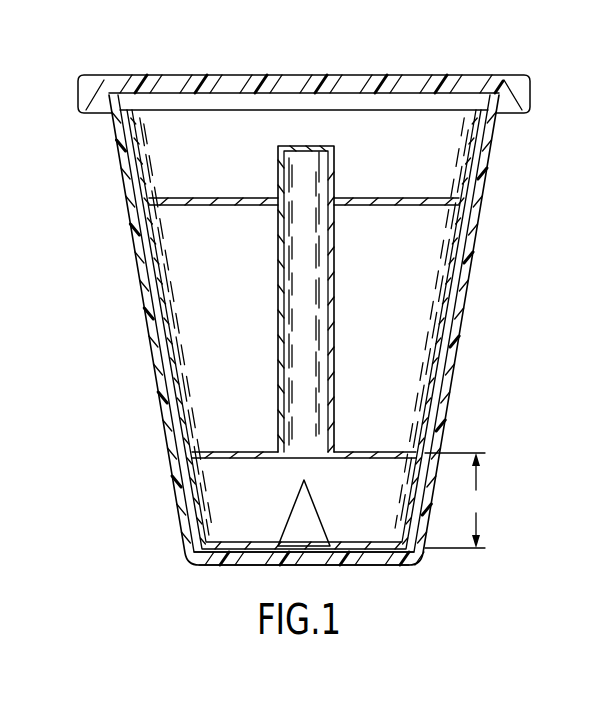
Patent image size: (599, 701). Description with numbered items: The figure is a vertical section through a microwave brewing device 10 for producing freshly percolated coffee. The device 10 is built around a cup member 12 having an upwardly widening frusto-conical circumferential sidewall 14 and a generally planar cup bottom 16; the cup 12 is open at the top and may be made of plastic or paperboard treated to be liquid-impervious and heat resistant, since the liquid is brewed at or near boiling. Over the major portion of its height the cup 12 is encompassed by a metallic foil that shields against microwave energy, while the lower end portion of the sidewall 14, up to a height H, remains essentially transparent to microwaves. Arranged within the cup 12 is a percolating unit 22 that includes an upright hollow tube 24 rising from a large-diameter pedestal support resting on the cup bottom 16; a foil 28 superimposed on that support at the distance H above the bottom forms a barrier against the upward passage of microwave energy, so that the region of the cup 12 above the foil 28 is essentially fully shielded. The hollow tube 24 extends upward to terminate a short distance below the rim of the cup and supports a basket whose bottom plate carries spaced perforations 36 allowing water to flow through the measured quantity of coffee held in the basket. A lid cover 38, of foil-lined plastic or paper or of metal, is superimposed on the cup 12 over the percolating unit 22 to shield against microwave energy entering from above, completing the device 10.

The microwave brewing device 10 is at (510, 158).
The cup member 12 is at (175, 483).
The frusto-conical circumferential sidewall 14 is at (458, 355).
The cup bottom 16 is at (242, 565).
The percolating unit 22 is at (346, 319).
The hollow tube 24 is at (277, 355).
The foil 28 is at (383, 453).
The perforations 36 is at (421, 204).
The lid cover 38 is at (267, 78).
The height H is at (455, 500).